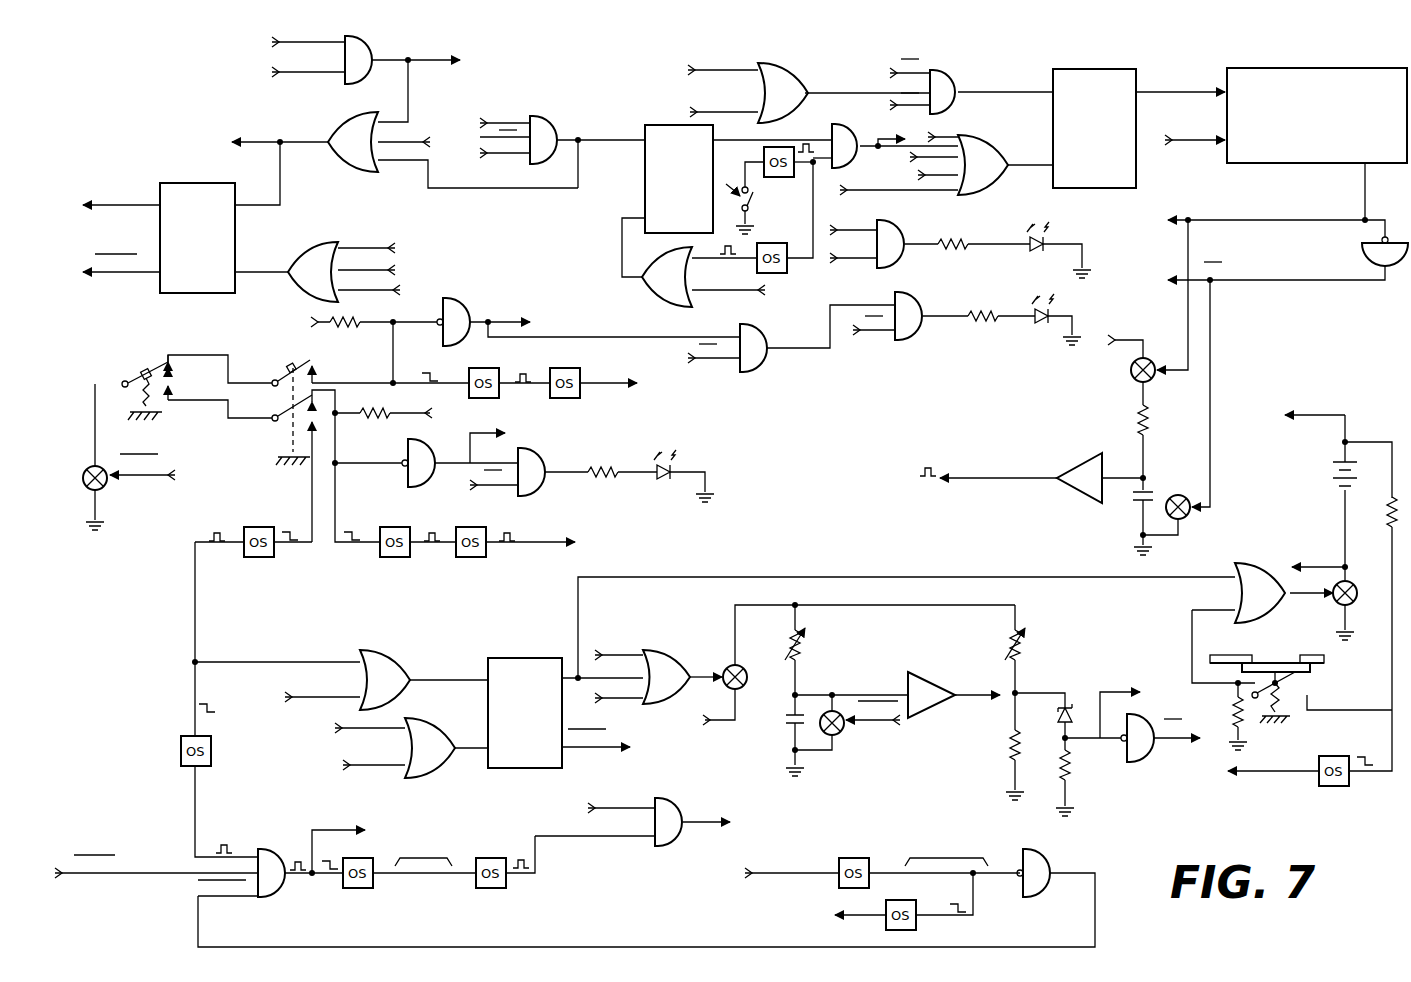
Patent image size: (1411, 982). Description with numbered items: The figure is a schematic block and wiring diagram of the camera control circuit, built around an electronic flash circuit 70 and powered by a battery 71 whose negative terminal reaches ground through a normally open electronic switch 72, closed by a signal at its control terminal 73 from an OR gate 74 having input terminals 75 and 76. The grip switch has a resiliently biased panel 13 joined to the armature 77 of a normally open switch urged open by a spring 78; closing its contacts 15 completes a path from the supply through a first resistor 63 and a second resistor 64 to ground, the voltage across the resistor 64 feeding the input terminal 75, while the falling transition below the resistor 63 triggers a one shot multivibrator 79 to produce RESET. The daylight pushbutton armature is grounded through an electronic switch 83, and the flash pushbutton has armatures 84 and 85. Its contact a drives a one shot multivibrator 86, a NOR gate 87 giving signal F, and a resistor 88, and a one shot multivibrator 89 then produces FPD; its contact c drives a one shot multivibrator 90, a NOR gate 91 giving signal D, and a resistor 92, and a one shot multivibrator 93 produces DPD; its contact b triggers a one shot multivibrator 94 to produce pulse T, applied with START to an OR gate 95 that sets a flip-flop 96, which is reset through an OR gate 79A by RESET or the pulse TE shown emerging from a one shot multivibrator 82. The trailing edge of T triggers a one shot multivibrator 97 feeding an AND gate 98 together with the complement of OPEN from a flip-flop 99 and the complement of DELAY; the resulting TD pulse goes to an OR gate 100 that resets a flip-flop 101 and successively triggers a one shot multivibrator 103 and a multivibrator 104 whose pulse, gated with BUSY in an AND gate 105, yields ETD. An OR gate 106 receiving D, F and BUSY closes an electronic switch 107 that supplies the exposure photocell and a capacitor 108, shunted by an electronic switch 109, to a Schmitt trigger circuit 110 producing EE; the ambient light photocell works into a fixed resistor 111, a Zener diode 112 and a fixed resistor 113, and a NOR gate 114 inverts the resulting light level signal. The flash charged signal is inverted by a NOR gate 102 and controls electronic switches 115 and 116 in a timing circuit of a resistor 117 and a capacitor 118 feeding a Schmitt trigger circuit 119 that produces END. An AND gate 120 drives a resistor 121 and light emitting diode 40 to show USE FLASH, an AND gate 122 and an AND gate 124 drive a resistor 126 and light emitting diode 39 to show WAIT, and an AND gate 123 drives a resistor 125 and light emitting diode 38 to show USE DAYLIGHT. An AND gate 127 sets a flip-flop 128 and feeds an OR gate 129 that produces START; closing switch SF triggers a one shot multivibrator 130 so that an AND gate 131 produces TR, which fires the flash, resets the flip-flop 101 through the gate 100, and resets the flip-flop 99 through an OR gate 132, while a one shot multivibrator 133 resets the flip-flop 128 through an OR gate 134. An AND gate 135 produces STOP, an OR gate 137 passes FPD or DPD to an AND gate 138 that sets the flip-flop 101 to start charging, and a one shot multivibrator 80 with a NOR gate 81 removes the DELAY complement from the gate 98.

The AND gate 135 is at (372, 48).
The OR gate 129 is at (352, 160).
The flip-flop 99 is at (194, 180).
The OR gate 132 is at (325, 240).
The resistor 88 is at (356, 318).
The NOR gate 87 is at (455, 305).
The AND gate 127 is at (550, 128).
The flip-flop 128 is at (664, 122).
The OR gate 137 is at (790, 64).
The AND gate 131 is at (885, 131).
The one shot multivibrator 130 is at (785, 177).
The one shot multivibrator 133 is at (782, 275).
The OR gate 134 is at (651, 283).
The AND gate 138 is at (952, 70).
The flip-flop 101 is at (1093, 68).
The OR gate 100 is at (988, 152).
The electronic flash circuit 70 is at (1375, 154).
The NOR gate 102 is at (1360, 255).
The AND gate 123 is at (898, 255).
The resistor 125 is at (953, 240).
The light emitting diode 38 is at (1032, 254).
The AND gate 122 is at (766, 336).
The AND gate 124 is at (912, 340).
The resistor 126 is at (988, 322).
The light emitting diode 39 is at (1040, 328).
The one shot multivibrator 86 is at (492, 370).
The one shot multivibrator 89 is at (584, 372).
The resistor 92 is at (385, 422).
The NOR gate 91 is at (435, 448).
The AND gate 120 is at (542, 454).
The resistor 121 is at (611, 466).
The light emitting diode 40 is at (667, 480).
The electronic switch 83 is at (82, 470).
The armature 84 is at (308, 360).
The armature 85 is at (283, 418).
The one shot multivibrator 94 is at (259, 527).
The one shot multivibrator 90 is at (398, 527).
The one shot multivibrator 93 is at (474, 527).
The one shot multivibrator 97 is at (212, 760).
The OR gate 95 is at (400, 656).
The OR gate 79A is at (432, 718).
The flip-flop 96 is at (524, 656).
The input terminal 76 is at (1209, 577).
The OR gate 106 is at (682, 656).
The electronic switch 107 is at (748, 672).
The capacitor 108 is at (788, 727).
The electronic switch 109 is at (842, 738).
The Schmitt trigger circuit 110 is at (930, 670).
The fixed resistor 111 is at (1008, 742).
The Zener diode 112 is at (1060, 718).
The fixed resistor 113 is at (1078, 768).
The NOR gate 114 is at (1153, 755).
The AND gate 105 is at (666, 806).
The AND gate 98 is at (272, 856).
The one shot multivibrator 103 is at (372, 858).
The multivibrator 104 is at (483, 858).
The one shot multivibrator 80 is at (868, 858).
The one-shot 82 is at (916, 906).
The NOR gate 81 is at (1050, 860).
The electronic switch 115 is at (1128, 383).
The resistor 117 is at (1148, 424).
The Schmitt trigger circuit 119 is at (1092, 455).
The capacitor 118 is at (1136, 502).
The electronic switch 116 is at (1184, 494).
The battery 71 is at (1362, 486).
The first resistor 63 is at (1386, 518).
The OR gate 74 is at (1265, 568).
The input terminal 75 is at (1207, 608).
The control terminal 73 is at (1312, 596).
The electronic switch 72 is at (1358, 596).
The switch contact 15 is at (1248, 654).
The resiliently biased panel 13 is at (1305, 672).
The armature 77 is at (1300, 680).
The spring 78 is at (1288, 710).
The second resistor 64 is at (1232, 705).
The one shot multivibrator 79 is at (1330, 758).